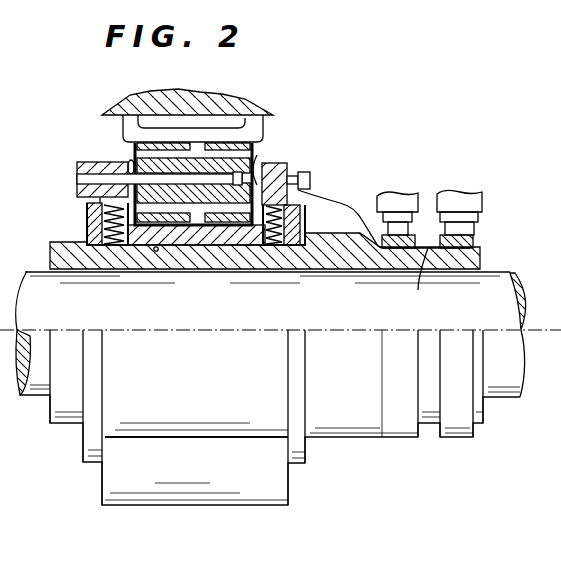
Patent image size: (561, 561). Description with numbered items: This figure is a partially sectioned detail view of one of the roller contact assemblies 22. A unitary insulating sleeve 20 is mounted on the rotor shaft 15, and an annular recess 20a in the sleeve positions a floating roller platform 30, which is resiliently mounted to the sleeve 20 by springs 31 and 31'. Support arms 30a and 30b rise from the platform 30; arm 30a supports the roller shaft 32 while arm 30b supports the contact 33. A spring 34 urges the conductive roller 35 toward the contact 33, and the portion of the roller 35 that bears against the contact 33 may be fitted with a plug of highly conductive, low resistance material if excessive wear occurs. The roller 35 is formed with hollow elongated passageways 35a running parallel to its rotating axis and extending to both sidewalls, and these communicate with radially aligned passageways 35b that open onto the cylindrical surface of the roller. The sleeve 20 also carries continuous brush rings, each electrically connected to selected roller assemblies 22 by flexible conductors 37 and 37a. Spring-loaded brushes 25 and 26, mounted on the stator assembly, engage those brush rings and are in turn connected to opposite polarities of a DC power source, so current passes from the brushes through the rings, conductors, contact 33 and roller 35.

The rotor shaft 15 is at (492, 273).
The unitary insulating sleeve 20 is at (66, 229).
The annular recess 20a is at (155, 251).
The roller contact assembly 22 is at (208, 205).
The brush 25 is at (375, 203).
The brush 26 is at (485, 205).
The floating roller platform 30 is at (220, 232).
The support arm 30a is at (78, 165).
The support arm 30b is at (288, 165).
The spring 31 is at (99, 253).
The spring 31' is at (284, 257).
The roller shaft 32 is at (77, 178).
The contact 33 is at (255, 165).
The spring 34 is at (130, 150).
The conductive roller 35 is at (128, 163).
The hollow elongated passageway 35a is at (193, 206).
The radially aligned passageway 35b is at (228, 137).
The flexible conductor 37 is at (336, 203).
The flexible conductor 37a is at (418, 290).